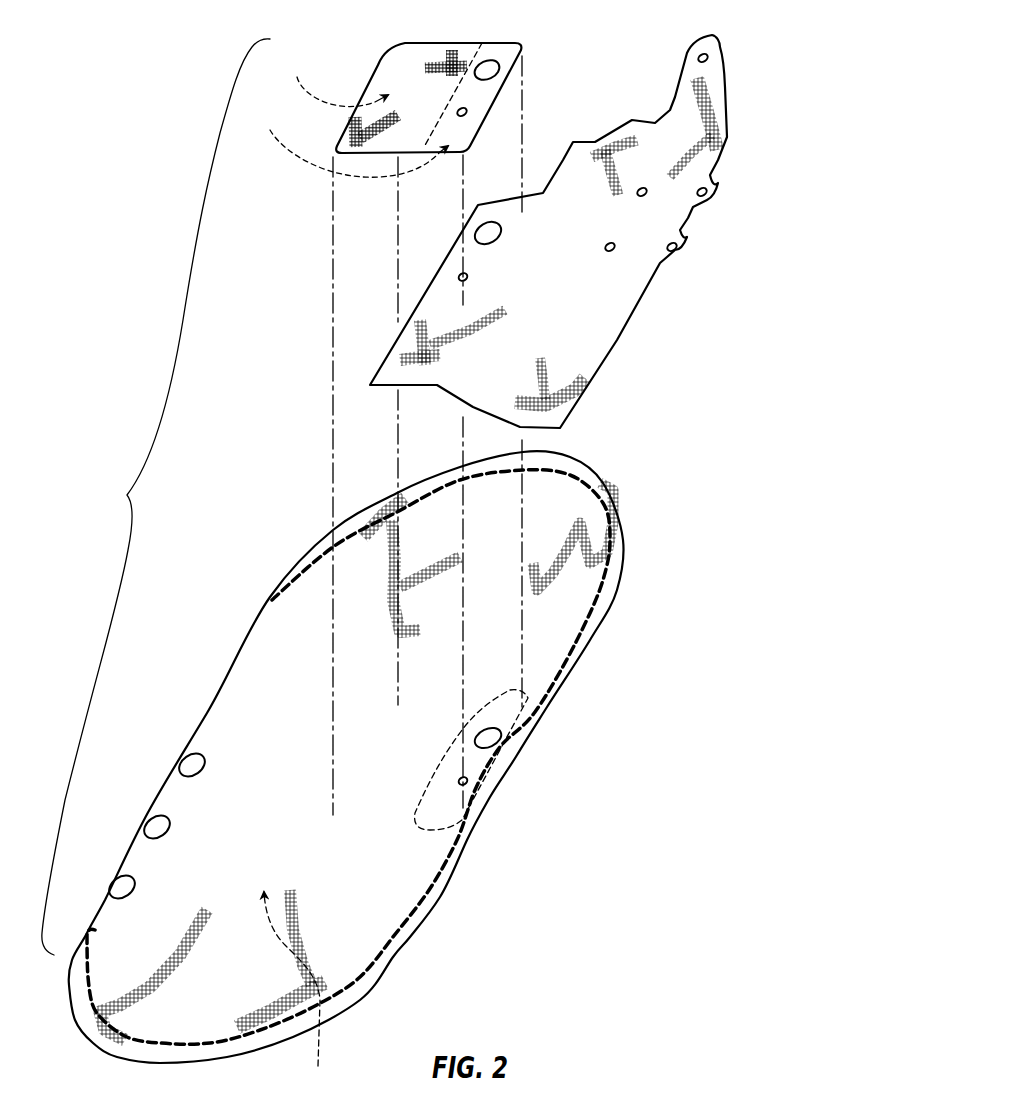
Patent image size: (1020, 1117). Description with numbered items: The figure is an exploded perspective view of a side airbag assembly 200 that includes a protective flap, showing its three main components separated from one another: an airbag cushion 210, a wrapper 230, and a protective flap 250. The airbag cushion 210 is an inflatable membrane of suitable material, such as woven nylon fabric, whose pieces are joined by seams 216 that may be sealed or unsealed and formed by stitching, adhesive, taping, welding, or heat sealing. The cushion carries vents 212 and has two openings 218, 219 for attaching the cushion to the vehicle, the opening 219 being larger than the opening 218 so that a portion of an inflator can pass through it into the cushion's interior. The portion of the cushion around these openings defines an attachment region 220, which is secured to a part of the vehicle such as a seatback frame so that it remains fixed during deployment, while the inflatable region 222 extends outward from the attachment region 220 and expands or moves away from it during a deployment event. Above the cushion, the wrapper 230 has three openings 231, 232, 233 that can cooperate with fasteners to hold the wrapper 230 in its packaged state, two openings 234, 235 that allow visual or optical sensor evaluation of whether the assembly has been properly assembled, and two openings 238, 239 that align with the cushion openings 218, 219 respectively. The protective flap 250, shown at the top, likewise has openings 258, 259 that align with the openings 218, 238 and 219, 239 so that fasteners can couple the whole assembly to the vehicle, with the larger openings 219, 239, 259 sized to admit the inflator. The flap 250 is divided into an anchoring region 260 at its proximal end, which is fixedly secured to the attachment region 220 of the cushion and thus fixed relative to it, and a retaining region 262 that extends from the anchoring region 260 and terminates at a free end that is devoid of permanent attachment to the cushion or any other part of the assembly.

The airbag assembly 200 is at (156, 497).
The airbag cushion 210 is at (613, 600).
The vents 212 is at (188, 755).
The seams 216 is at (612, 520).
The opening 218 is at (471, 776).
The opening 219 is at (502, 734).
The attachment region 220 is at (426, 843).
The inflatable region 222 is at (298, 992).
The wrapper 230 is at (619, 340).
The opening 231 is at (679, 246).
The opening 232 is at (712, 185).
The opening 233 is at (709, 55).
The opening 234 is at (616, 256).
The opening 235 is at (649, 188).
The opening 238 is at (456, 276).
The opening 239 is at (477, 231).
The protective flap 250 is at (467, 40).
The opening 258 is at (470, 107).
The opening 259 is at (494, 61).
The anchoring region 260 is at (349, 142).
The retaining region 262 is at (333, 79).